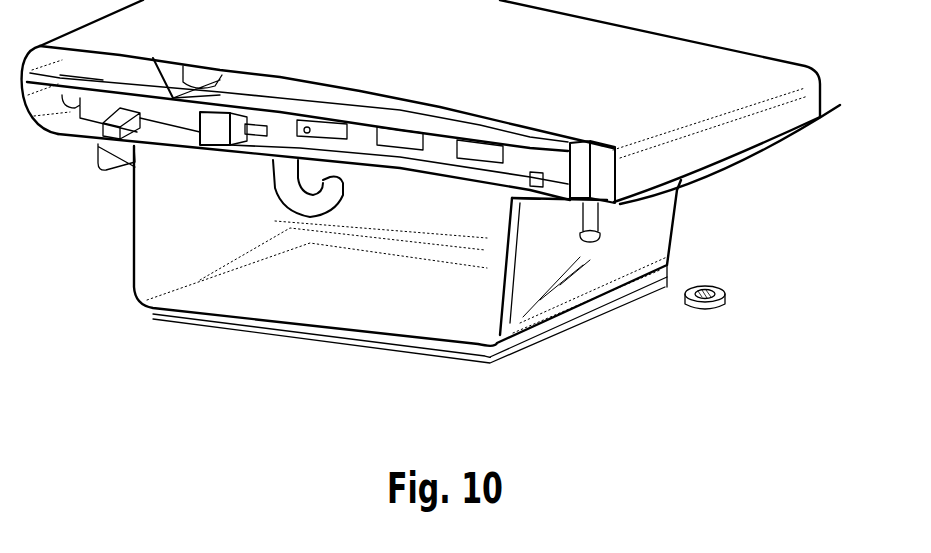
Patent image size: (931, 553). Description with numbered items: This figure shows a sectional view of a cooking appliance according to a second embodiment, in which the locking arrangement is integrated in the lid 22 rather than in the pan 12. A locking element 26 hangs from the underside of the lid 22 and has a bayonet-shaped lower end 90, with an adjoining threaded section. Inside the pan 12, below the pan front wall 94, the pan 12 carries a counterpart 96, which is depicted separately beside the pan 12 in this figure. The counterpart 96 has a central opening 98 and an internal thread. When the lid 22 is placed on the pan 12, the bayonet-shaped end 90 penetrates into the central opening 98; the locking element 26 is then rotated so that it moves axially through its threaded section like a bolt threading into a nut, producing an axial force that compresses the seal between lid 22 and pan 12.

The pan 12 is at (158, 235).
The lid 22 is at (530, 75).
The locking element 26 is at (600, 210).
The bayonet-shaped lower end 90 is at (592, 241).
The pan front wall 94 is at (513, 202).
The counterpart 96 is at (723, 307).
The central opening 98 is at (703, 288).